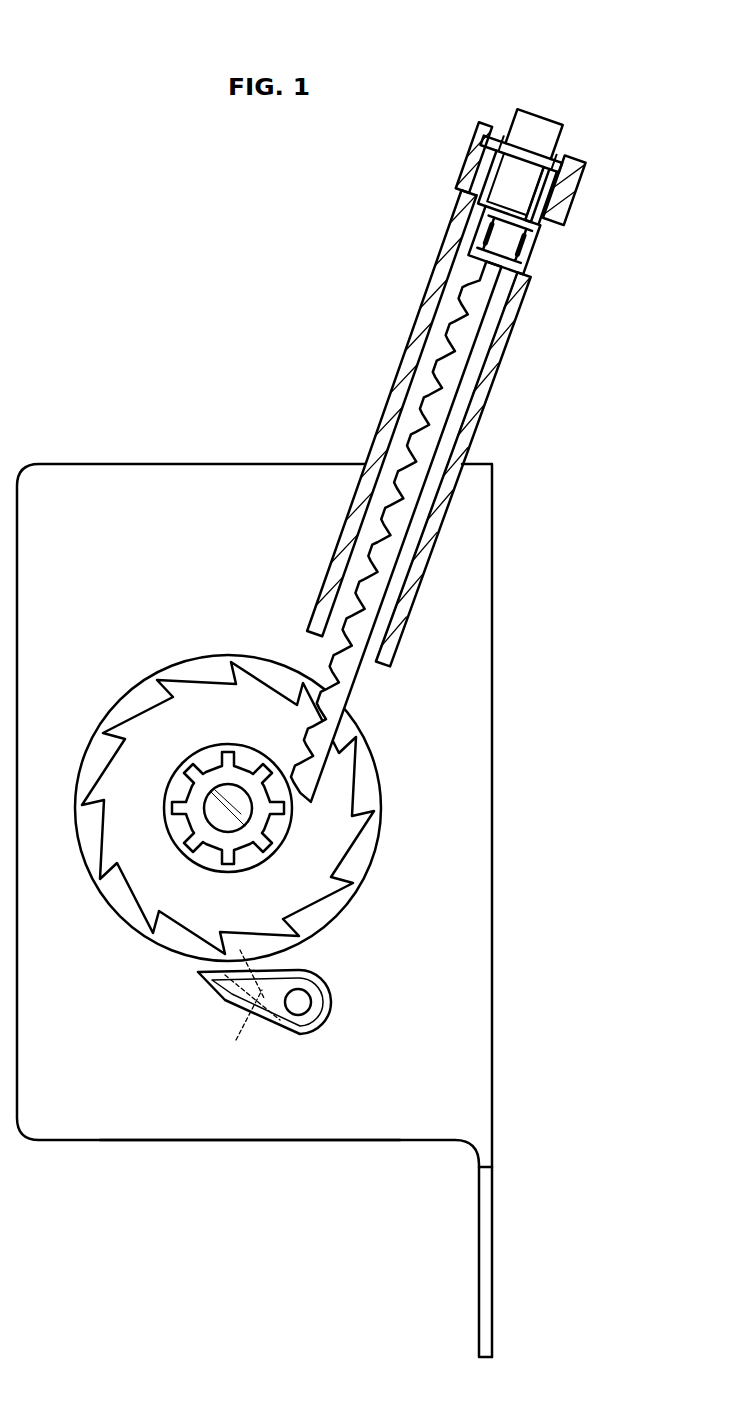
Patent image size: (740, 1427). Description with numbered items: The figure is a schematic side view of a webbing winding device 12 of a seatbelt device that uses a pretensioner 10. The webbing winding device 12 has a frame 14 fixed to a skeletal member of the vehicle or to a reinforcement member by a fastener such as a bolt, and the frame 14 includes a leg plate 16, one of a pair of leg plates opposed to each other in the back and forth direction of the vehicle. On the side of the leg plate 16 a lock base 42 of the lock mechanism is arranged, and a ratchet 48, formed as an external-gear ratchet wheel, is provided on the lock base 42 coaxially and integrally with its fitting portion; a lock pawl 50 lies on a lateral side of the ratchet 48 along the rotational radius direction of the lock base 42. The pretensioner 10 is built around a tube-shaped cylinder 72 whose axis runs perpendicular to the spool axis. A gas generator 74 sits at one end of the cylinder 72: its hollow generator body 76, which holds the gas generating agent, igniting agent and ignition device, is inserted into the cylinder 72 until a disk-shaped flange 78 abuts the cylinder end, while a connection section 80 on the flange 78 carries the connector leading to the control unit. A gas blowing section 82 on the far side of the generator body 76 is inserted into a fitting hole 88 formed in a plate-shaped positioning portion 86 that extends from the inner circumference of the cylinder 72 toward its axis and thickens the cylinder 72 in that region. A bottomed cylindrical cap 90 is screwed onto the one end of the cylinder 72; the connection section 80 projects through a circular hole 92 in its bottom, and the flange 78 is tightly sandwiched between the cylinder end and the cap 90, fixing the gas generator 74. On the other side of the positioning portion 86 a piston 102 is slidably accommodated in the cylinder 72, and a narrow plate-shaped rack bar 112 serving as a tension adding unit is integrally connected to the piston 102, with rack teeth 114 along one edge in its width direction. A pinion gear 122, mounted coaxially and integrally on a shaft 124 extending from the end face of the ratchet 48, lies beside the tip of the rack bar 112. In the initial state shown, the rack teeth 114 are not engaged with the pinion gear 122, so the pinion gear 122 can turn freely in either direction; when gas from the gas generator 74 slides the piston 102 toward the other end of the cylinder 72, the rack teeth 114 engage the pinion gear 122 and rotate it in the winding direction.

The pretensioner 10 is at (206, 596).
The webbing winding device 12 is at (70, 342).
The frame 14 is at (458, 1158).
The leg plate 16 is at (236, 1142).
The lock base 42 is at (196, 702).
The ratchet 48 is at (135, 720).
The lock pawl 50 is at (230, 1000).
The cylinder 72 is at (491, 397).
The gas generator 74 is at (545, 115).
The generator body 76 is at (492, 170).
The flange 78 is at (506, 132).
The connection section 80 is at (528, 118).
The gas blowing section 82 is at (505, 215).
The positioning portion 86 is at (488, 196).
The fitting hole 88 is at (540, 212).
The cap 90 is at (572, 214).
The hole 92 is at (548, 155).
The piston 102 is at (470, 255).
The rack bar 112 is at (497, 322).
The rack teeth 114 is at (420, 390).
The pinion gear 122 is at (195, 790).
The shaft 124 is at (210, 815).